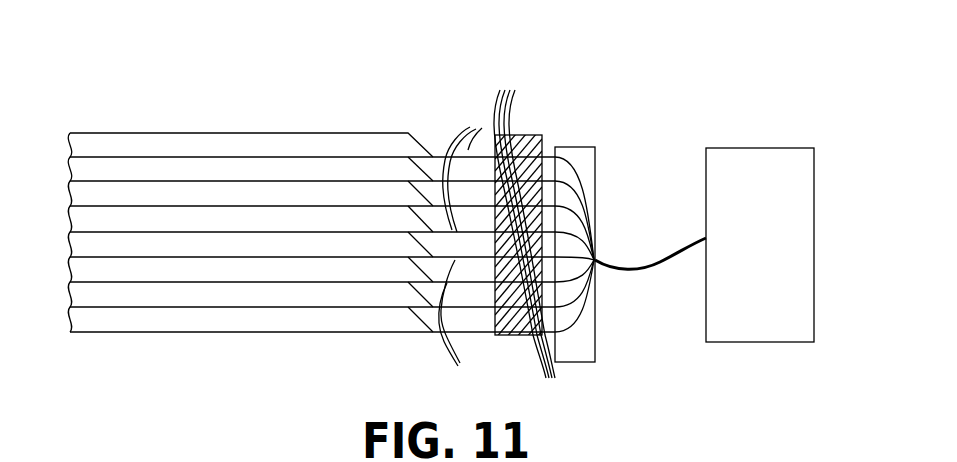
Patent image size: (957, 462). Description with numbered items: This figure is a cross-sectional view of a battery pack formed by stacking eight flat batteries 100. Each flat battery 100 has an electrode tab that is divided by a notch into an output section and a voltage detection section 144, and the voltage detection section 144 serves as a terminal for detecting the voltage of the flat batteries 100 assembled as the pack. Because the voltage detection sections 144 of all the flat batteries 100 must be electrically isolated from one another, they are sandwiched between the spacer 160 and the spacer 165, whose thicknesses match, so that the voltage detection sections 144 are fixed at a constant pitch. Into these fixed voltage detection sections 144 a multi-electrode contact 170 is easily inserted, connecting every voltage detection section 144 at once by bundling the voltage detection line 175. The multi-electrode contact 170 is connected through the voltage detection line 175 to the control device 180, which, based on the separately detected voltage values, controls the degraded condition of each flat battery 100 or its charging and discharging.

The flat battery 100 is at (330, 131).
The voltage detection section 144 is at (461, 249).
The spacer 160 is at (510, 229).
The spacer 165 is at (544, 251).
The multi-electrode contact 170 is at (589, 147).
The voltage detection line 175 is at (660, 268).
The control device 180 is at (765, 158).